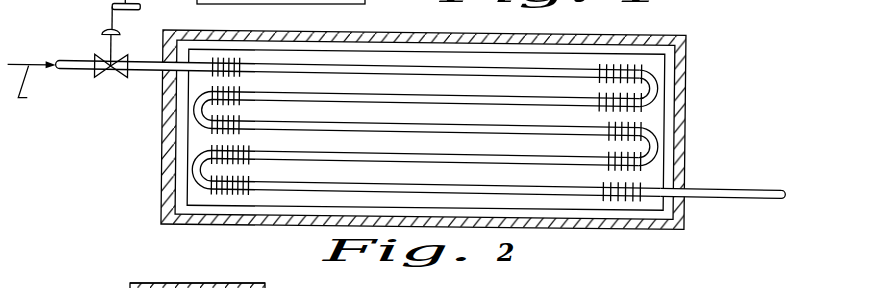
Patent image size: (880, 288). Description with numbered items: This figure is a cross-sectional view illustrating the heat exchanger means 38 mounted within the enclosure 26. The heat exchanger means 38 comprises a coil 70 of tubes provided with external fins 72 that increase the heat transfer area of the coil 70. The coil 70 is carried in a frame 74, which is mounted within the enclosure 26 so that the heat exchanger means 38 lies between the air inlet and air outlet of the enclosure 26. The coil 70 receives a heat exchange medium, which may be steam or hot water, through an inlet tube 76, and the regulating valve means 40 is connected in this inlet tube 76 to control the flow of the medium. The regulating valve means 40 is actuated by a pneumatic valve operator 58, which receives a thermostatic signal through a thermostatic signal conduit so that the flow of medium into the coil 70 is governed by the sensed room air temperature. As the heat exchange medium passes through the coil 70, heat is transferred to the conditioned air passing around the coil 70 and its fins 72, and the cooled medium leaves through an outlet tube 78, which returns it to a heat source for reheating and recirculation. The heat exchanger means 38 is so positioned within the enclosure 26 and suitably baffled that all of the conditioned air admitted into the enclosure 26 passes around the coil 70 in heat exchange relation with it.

The enclosure 26 is at (472, 33).
The heat exchanger means 38 is at (645, 39).
The regulating valve means 40 is at (113, 79).
The pneumatic valve operator 58 is at (110, 28).
The coil 70 is at (658, 98).
The external fins 72 is at (242, 63).
The frame 74 is at (603, 219).
The inlet tube 76 is at (97, 56).
The outlet tube 78 is at (742, 199).